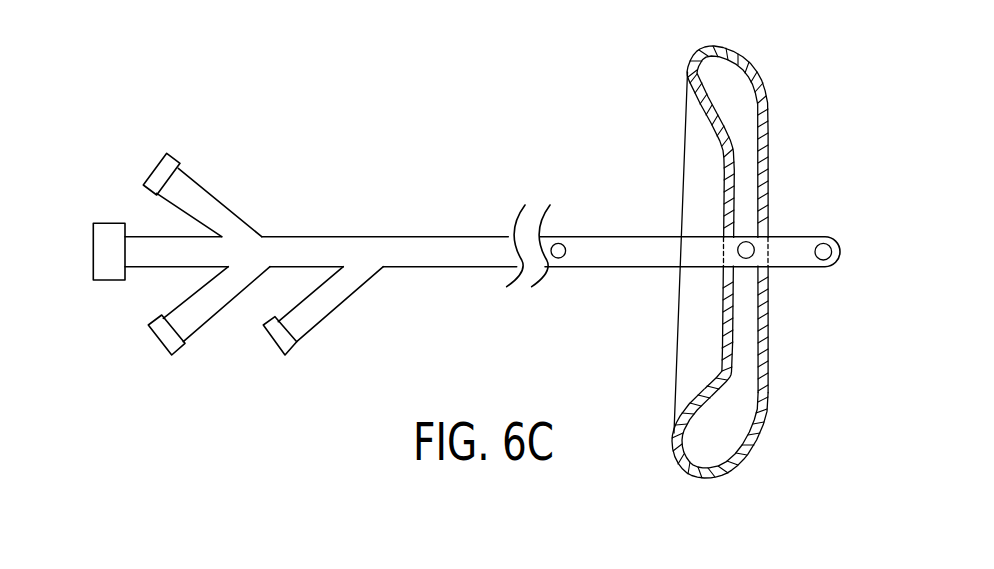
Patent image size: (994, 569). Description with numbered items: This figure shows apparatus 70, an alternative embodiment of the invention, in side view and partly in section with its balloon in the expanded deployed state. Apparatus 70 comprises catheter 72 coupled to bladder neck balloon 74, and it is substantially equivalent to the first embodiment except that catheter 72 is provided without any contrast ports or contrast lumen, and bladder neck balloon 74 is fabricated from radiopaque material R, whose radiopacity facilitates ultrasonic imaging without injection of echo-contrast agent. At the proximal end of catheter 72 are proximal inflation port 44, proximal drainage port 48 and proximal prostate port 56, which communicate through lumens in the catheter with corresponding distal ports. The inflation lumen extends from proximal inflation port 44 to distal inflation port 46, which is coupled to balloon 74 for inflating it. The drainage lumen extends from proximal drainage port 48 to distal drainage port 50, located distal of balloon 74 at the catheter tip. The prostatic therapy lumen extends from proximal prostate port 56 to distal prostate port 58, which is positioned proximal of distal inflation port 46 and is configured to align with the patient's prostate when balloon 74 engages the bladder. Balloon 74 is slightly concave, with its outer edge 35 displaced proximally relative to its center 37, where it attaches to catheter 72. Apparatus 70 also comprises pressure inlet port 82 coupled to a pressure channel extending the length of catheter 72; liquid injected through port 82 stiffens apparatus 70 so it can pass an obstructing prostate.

The proximal drainage port 48 is at (102, 253).
The pressure inlet port 82 is at (168, 162).
The proximal prostate port 56 is at (168, 334).
The proximal inflation port 44 is at (282, 336).
The catheter 72 is at (348, 248).
The apparatus 70 is at (588, 158).
The distal prostate port 58 is at (557, 258).
The distal inflation port 46 is at (748, 242).
The distal drainage port 50 is at (822, 245).
The bladder neck balloon 74 is at (740, 55).
The radiopaque material R is at (768, 110).
The center 37 is at (722, 288).
The outer edge 35 is at (672, 463).